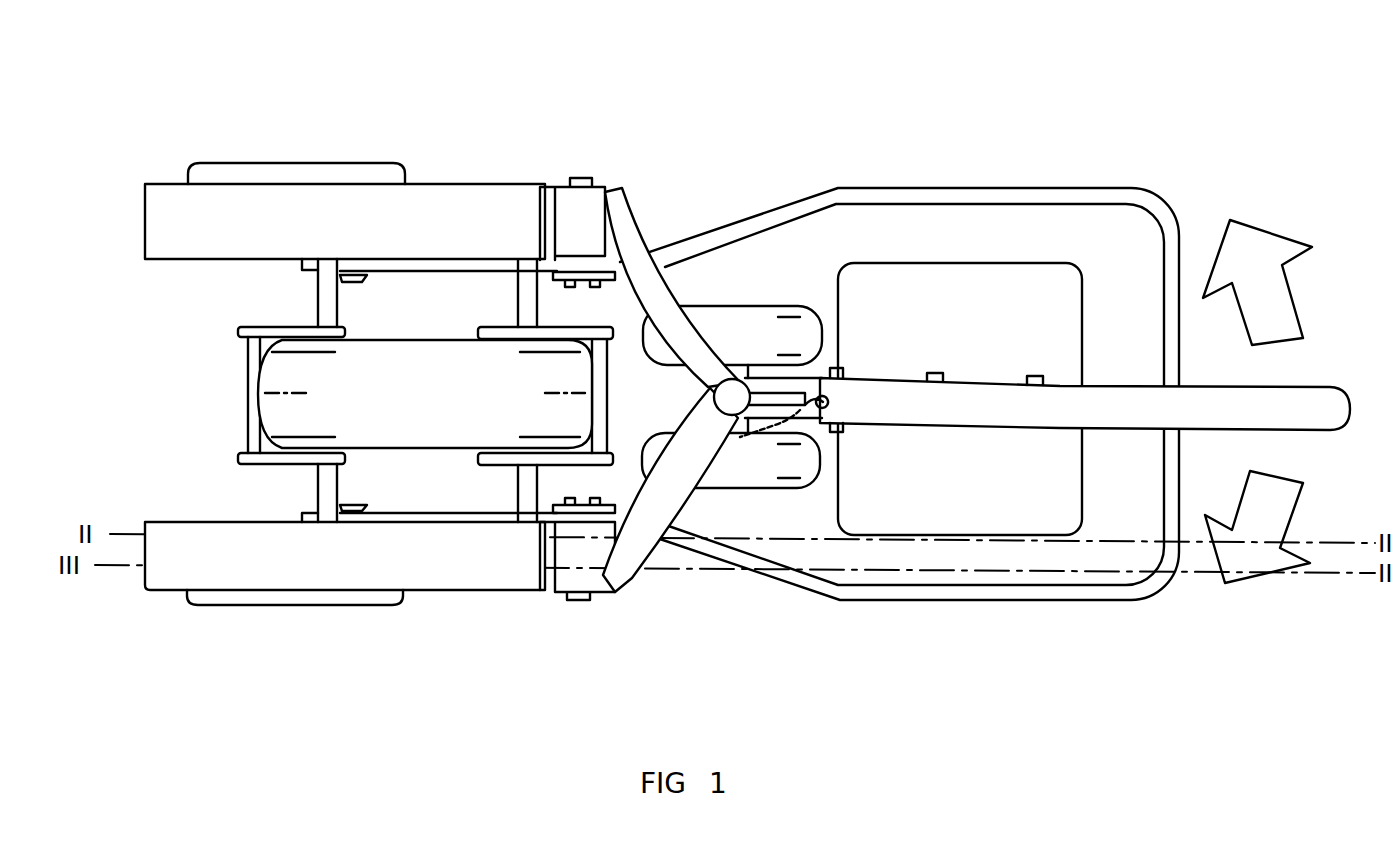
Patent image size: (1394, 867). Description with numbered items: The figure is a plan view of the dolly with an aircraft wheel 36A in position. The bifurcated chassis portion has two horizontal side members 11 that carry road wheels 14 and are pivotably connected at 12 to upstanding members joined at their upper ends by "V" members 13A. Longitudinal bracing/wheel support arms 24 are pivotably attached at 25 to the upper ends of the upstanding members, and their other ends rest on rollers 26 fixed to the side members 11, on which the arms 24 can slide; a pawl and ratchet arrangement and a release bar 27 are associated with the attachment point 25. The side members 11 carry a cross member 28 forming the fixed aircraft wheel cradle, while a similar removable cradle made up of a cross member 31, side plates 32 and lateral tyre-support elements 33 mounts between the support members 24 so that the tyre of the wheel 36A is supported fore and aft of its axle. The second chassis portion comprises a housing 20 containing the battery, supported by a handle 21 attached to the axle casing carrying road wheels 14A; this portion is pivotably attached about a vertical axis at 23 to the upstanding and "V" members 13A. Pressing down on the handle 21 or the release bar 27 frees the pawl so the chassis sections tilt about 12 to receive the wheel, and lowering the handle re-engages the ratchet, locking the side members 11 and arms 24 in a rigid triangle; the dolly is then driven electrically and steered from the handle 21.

The horizontal side members 11 is at (232, 210).
The road wheels 14 is at (318, 178).
The longitudinal bracing/wheel support arms 24 is at (400, 262).
The pivotable connection 12 is at (572, 180).
The pivotable attachment point 25 is at (600, 262).
The "V" members 13A is at (650, 240).
The road wheels 14A is at (757, 330).
The handle 21 is at (1117, 400).
The rollers 26 is at (345, 283).
The side plates 32 is at (270, 325).
The lateral tyre-support elements 33 is at (258, 352).
The aircraft wheel 36A is at (275, 407).
The cross member 31 is at (323, 488).
The cross member 28 is at (523, 493).
The vertical pivot axis 23 is at (722, 412).
The release bar 27 is at (940, 602).
The housing 20 is at (1035, 512).